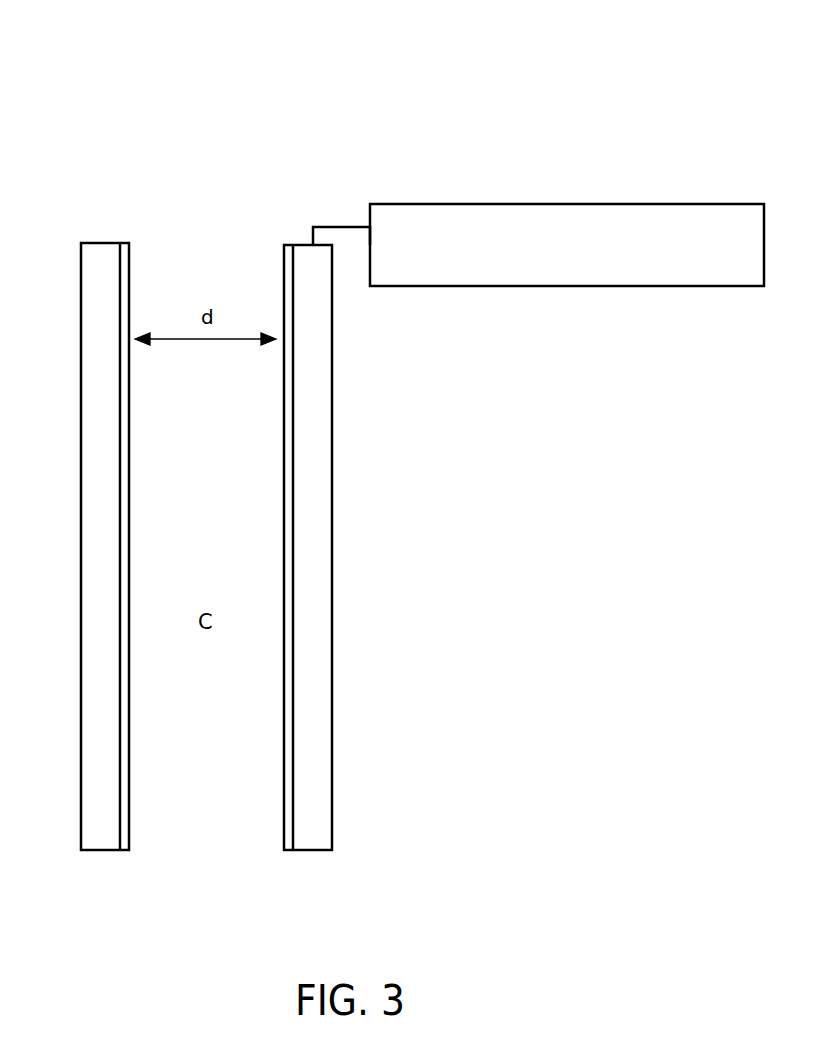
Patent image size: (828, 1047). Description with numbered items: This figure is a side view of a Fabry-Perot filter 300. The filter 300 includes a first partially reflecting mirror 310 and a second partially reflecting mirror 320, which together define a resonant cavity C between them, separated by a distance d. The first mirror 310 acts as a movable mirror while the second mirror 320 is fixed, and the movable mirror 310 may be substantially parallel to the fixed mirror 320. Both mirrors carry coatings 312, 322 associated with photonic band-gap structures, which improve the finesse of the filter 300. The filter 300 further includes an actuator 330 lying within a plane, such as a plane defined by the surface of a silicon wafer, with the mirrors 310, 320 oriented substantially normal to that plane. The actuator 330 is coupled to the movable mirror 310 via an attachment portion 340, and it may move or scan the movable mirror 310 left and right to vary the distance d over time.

The Fabry-Perot filter 300 is at (180, 53).
The first partially reflecting mirror 310 is at (332, 745).
The coating 312 is at (284, 513).
The second partially reflecting mirror 320 is at (81, 513).
The coating 322 is at (128, 815).
The actuator 330 is at (659, 286).
The attachment portion 340 is at (312, 230).